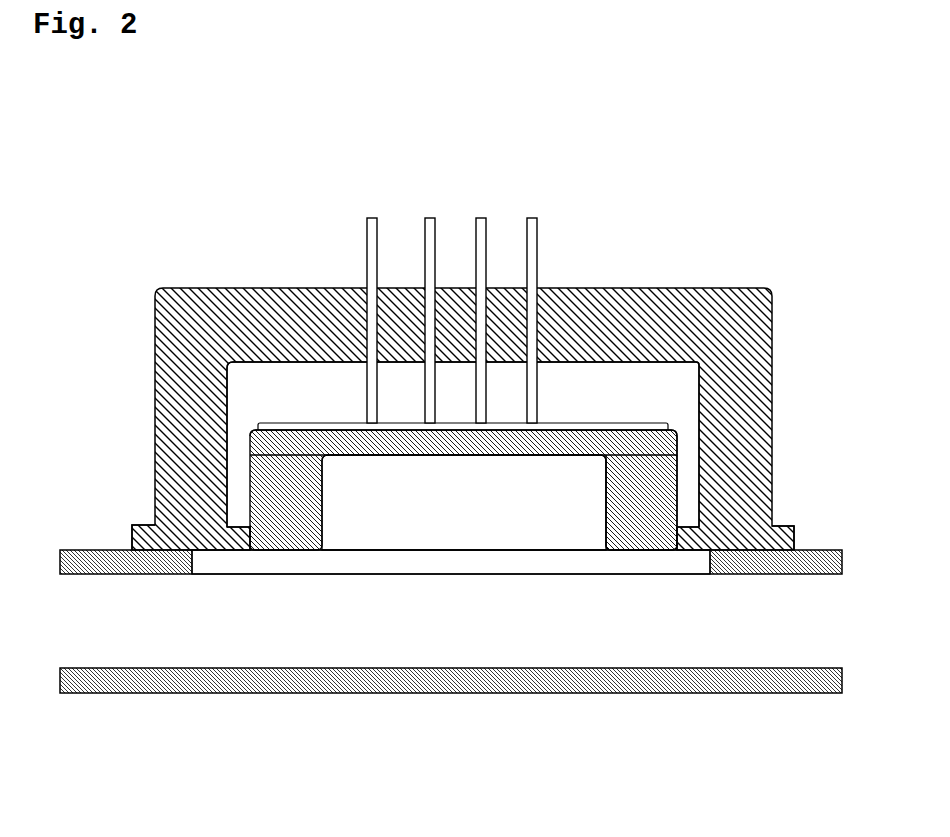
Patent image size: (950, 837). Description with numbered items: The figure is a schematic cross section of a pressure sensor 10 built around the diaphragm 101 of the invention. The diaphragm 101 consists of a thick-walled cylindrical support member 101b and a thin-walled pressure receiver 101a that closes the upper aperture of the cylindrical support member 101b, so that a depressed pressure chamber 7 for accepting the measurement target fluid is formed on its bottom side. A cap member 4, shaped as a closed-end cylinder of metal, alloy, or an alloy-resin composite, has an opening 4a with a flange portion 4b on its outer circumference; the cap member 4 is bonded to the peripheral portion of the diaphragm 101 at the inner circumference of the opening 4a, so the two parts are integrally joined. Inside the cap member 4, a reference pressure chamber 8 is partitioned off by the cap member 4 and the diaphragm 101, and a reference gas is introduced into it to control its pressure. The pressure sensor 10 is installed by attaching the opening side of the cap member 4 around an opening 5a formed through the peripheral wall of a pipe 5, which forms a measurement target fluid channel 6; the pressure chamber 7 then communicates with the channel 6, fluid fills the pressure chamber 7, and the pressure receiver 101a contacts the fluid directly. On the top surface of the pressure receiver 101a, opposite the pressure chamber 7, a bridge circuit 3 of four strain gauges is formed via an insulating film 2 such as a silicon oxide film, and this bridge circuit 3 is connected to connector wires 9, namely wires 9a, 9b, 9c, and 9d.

The pressure sensor 10 is at (759, 208).
The insulating film 2 is at (663, 427).
The bridge circuit 3 is at (633, 422).
The cap member 4 is at (700, 308).
The opening 4a is at (232, 510).
The flange portion 4b is at (142, 530).
The pipe 5 is at (825, 563).
The opening 5a is at (471, 562).
The measurement target fluid channel 6 is at (231, 623).
The pressure chamber 7 is at (393, 511).
The reference pressure chamber 8 is at (289, 388).
The connector wires 9 is at (452, 264).
The wire 9a is at (372, 218).
The wire 9b is at (430, 218).
The wire 9c is at (481, 218).
The wire 9d is at (531, 290).
The diaphragm 101 is at (463, 544).
The pressure receiver 101a is at (545, 443).
The cylindrical support member 101b is at (635, 533).